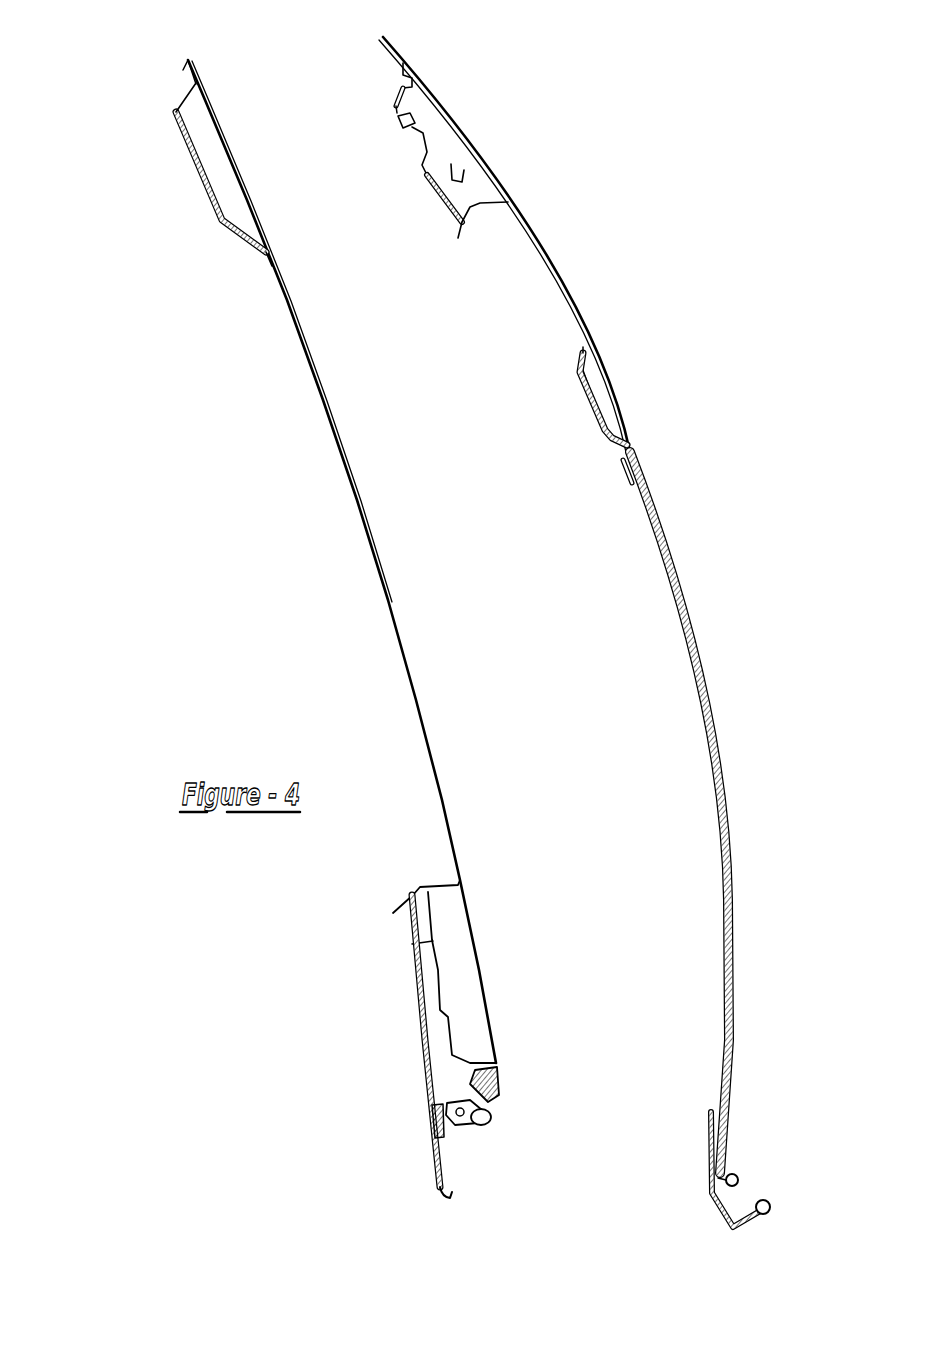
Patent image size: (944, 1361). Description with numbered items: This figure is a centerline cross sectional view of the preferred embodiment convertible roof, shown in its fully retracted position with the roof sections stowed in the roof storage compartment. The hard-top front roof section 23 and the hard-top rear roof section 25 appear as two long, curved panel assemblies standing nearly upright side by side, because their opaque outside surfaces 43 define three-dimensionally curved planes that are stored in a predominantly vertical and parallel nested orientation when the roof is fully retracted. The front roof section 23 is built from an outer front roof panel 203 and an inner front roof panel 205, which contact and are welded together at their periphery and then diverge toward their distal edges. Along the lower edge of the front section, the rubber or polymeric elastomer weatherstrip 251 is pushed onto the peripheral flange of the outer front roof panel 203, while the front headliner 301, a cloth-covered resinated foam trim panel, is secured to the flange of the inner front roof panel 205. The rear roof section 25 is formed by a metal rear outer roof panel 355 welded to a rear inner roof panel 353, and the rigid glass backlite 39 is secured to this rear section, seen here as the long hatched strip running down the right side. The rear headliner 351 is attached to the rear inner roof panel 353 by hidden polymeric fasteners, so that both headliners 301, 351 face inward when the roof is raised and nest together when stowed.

The hard-top front roof section 23 is at (150, 72).
The hard-top rear roof section 25 is at (340, 63).
The backlite 39 is at (692, 633).
The outside surfaces 43 is at (623, 400).
The outer front roof panel 203 is at (413, 693).
The inner front roof panel 205 is at (217, 210).
The weatherstrip 251 is at (487, 1117).
The headliner 301 is at (417, 1030).
The rear headliner 351 is at (397, 102).
The rear inner roof panel 353 is at (460, 180).
The rear outer roof panel 355 is at (552, 262).